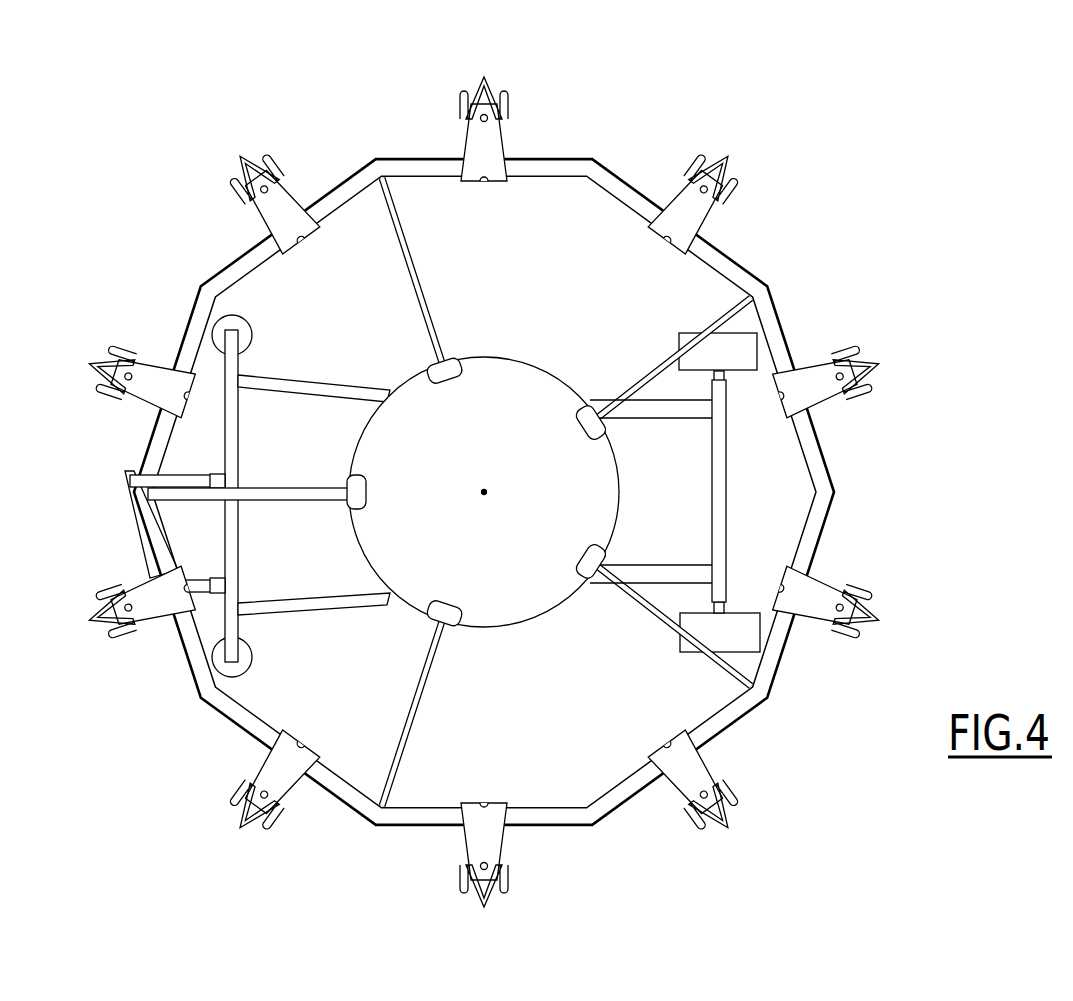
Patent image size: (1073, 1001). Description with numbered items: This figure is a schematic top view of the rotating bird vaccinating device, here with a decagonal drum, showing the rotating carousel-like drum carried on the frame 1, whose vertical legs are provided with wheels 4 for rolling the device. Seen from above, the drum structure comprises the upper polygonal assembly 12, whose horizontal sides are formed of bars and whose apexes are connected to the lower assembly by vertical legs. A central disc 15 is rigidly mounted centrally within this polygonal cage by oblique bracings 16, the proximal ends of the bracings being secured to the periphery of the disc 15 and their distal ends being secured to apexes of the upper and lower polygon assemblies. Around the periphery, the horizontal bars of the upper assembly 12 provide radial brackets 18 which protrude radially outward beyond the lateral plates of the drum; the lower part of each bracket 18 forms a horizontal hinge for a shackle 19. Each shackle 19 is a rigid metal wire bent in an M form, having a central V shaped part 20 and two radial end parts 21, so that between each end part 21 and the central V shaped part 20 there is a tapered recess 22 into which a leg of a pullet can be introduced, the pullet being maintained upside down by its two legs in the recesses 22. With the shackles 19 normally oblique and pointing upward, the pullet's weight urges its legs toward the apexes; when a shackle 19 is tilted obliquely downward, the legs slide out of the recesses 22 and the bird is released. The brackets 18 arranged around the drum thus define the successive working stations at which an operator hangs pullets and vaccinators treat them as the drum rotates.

The frame 1 is at (325, 365).
The wheels 4 is at (680, 333).
The upper octagonal assembly 12 is at (773, 322).
The central disc 15 is at (512, 358).
The oblique bracings 16 is at (425, 268).
The radial brackets 18 is at (695, 217).
The shackle 19 is at (492, 898).
The central V shaped part 20 is at (730, 822).
The radial end parts 21 is at (843, 633).
The tapered recess 22 is at (855, 350).